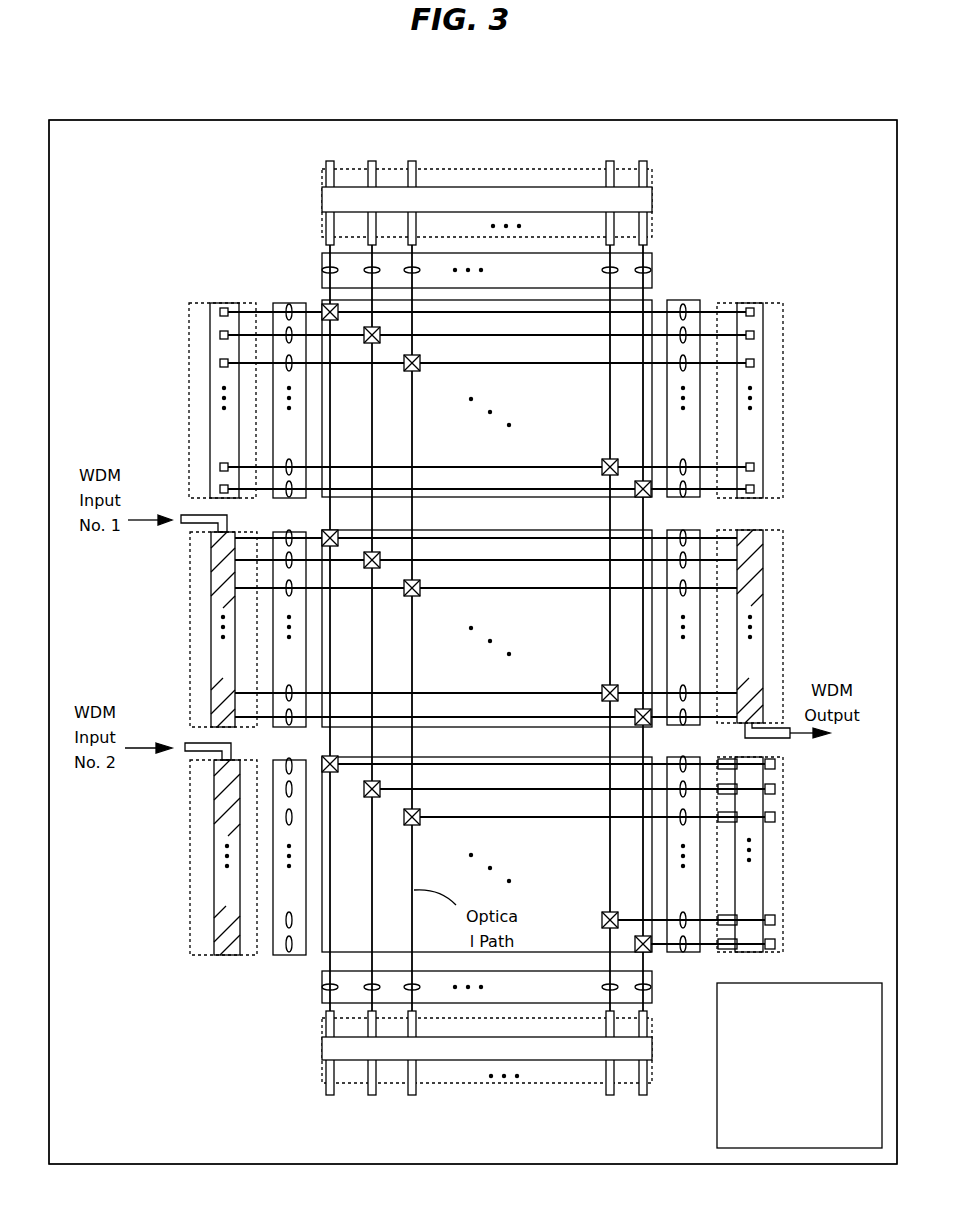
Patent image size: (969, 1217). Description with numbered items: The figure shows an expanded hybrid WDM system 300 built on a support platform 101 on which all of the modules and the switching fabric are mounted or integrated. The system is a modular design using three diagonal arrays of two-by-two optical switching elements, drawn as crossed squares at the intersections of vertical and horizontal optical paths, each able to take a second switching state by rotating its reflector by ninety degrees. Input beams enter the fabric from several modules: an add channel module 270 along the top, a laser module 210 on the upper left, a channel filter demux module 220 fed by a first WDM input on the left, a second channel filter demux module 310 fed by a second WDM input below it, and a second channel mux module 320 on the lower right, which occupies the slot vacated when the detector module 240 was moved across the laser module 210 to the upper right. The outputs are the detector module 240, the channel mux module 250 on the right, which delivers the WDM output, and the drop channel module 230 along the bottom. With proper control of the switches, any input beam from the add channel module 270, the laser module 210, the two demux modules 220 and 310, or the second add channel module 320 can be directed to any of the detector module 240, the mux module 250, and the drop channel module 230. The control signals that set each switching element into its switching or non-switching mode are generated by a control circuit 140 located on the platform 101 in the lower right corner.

The expanded system 300 is at (368, 104).
The support platform 101 is at (176, 1128).
The add channel module 270 is at (322, 196).
The drop channel module 230 is at (322, 1047).
The laser module 210 is at (222, 352).
The detector module 240 is at (765, 310).
The channel filter demux module 220 is at (220, 643).
The channel mux module 250 is at (758, 535).
The second channel filter demux module 310 is at (225, 881).
The second channel mux module 320 is at (758, 903).
The control circuit 140 is at (783, 1090).